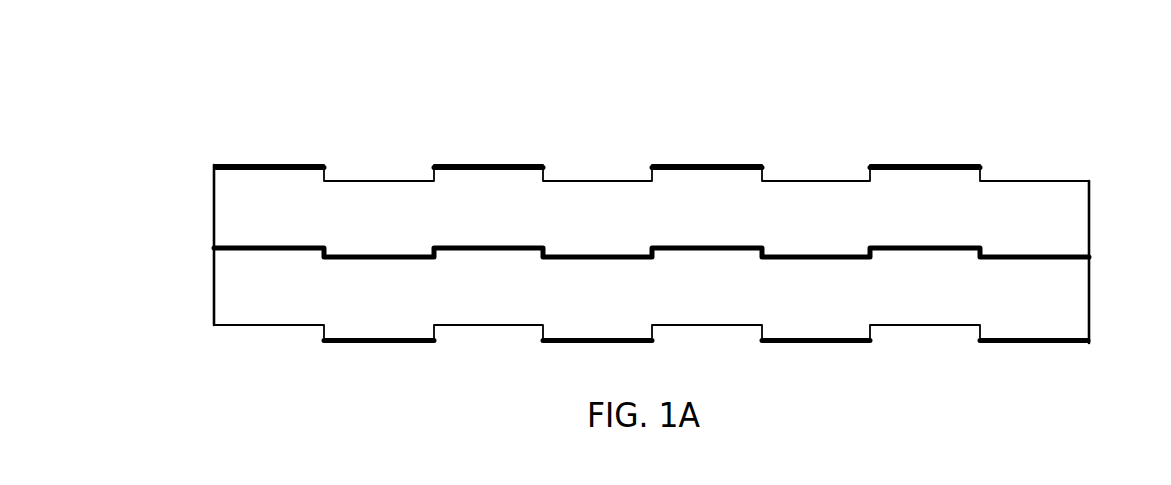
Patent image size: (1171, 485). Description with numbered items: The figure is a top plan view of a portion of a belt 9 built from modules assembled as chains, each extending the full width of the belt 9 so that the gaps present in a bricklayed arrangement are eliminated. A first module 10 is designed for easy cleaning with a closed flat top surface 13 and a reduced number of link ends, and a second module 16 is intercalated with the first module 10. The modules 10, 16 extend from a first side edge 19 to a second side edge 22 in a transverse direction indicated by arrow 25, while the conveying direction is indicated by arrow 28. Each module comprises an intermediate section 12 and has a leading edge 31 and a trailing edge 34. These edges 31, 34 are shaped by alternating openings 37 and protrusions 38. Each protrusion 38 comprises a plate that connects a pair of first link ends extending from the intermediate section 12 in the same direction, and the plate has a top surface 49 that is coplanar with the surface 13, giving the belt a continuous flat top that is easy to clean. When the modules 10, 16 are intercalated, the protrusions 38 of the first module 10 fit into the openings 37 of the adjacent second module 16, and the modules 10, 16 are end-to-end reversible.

The belt 9 is at (710, 84).
The first module 10 is at (189, 200).
The intermediate section 12 is at (1027, 211).
The closed flat top surface 13 is at (377, 223).
The second module 16 is at (200, 283).
The first side edge 19 is at (210, 226).
The second side edge 22 is at (1090, 226).
The arrow indicating transverse direction 25 is at (378, 388).
The arrow indicating conveying direction 28 is at (542, 63).
The leading edge 31 is at (505, 348).
The trailing edge 34 is at (411, 246).
The openings 37 is at (335, 168).
The protrusions 38 is at (520, 160).
The top surface 49 is at (583, 330).